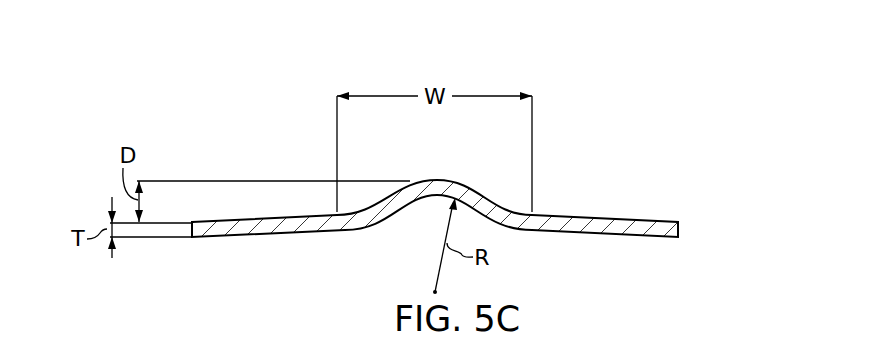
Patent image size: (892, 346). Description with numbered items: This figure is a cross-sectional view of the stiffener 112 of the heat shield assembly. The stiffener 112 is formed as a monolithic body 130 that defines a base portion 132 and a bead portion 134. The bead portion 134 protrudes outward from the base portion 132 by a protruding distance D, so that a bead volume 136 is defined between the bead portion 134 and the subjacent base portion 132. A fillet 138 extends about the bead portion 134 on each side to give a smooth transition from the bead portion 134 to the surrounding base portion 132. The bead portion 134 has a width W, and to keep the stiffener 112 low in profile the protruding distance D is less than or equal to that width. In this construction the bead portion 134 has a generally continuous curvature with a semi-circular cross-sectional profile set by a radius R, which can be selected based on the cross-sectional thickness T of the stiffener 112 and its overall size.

The stiffener 112 is at (569, 120).
The monolithic body 130 is at (653, 220).
The base portion 132 is at (268, 217).
The bead portion 134 is at (437, 177).
The bead volume 136 is at (403, 224).
The fillet 138 is at (345, 214).